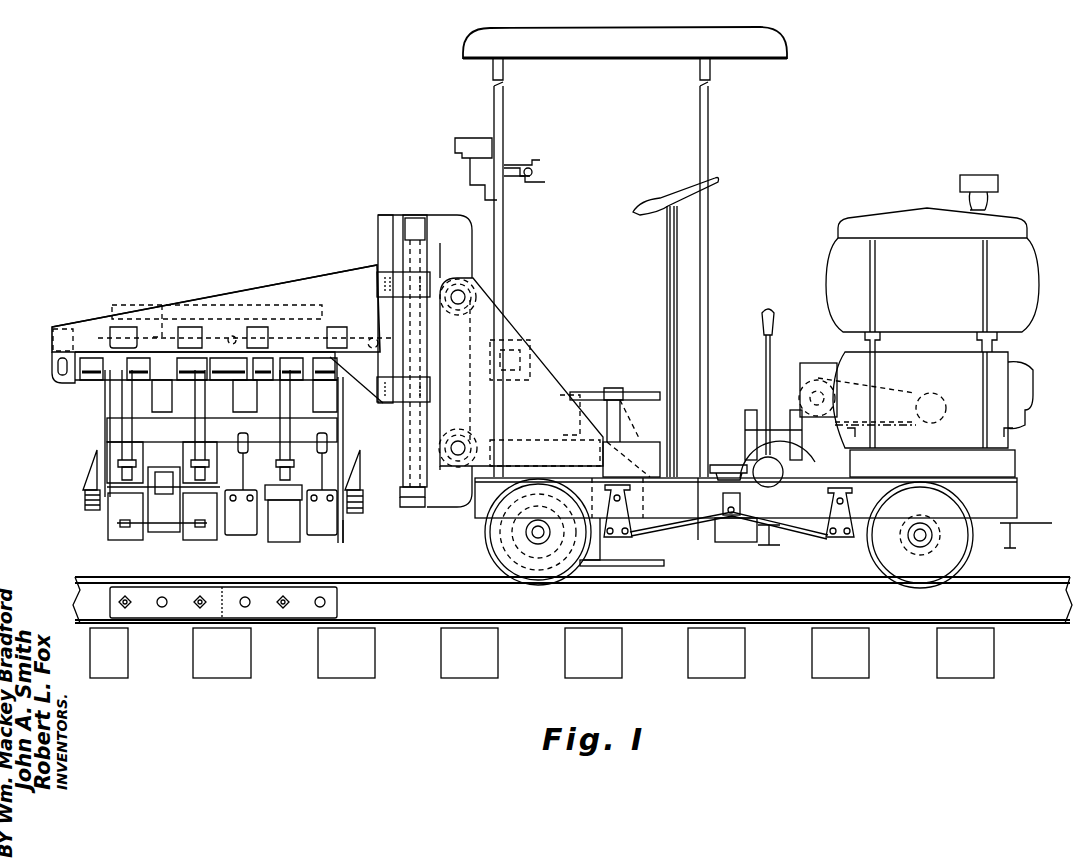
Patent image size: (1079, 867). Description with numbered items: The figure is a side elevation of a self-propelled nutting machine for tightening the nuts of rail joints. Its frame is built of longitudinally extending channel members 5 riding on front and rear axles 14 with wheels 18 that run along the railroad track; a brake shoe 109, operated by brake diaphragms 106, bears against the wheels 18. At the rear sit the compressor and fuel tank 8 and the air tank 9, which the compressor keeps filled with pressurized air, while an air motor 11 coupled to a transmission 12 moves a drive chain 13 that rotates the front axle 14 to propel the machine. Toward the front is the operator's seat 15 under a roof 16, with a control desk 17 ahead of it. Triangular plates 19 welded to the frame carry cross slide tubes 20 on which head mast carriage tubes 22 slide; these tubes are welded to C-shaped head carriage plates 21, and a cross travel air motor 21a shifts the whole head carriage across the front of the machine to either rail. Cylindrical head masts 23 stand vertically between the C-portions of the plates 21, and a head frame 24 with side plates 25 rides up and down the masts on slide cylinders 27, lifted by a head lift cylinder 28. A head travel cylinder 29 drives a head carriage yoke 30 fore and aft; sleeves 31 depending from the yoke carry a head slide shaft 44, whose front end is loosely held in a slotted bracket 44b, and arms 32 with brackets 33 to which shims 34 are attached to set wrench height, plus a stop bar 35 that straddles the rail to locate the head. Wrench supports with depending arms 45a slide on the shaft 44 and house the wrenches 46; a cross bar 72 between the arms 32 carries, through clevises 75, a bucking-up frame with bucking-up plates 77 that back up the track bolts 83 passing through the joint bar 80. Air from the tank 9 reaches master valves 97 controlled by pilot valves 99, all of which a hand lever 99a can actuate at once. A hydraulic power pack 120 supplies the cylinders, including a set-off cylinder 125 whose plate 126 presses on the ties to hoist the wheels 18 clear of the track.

The longitudinally extending channel members 5 is at (1020, 496).
The compressor and fuel tank 8 is at (932, 263).
The air tank 9 is at (933, 414).
The air motor 11 is at (820, 455).
The transmission 12 is at (770, 448).
The drive chain 13 is at (675, 530).
The axle 14 is at (542, 525).
The seat 15 is at (665, 203).
The roof 16 is at (778, 52).
The control desk 17 is at (455, 142).
The wheels 18 is at (488, 556).
The triangular plates 19 is at (538, 362).
The cross slide tubes 20 is at (476, 297).
The head carriage plates 21 is at (455, 228).
The cross travel air motor 21a is at (555, 392).
The head mast carriage tubes 22 is at (458, 436).
The head masts 23 is at (440, 470).
The head frame 24 is at (255, 284).
The side plates 25 is at (292, 280).
The slide cylinders 27 is at (378, 278).
The head lift cylinder 28 is at (408, 445).
The head travel cylinder 29 is at (372, 336).
The head carriage yoke 30 is at (160, 312).
The cylindrical sleeves 31 is at (104, 388).
The arms 32 is at (104, 420).
The bracket 33 is at (88, 470).
The shims 34 is at (84, 498).
The stop bar 35 is at (344, 540).
The head slide shaft 44 is at (80, 382).
The slotted bracket 44b is at (50, 370).
The hanger blocks 45a is at (120, 393).
The wrenches 46 is at (115, 503).
The cross bar 72 is at (252, 454).
The clevises 75 is at (322, 434).
The bucking-up plates 77 is at (255, 538).
The joint bar 80 is at (298, 590).
The track bolt 83 is at (165, 607).
The master valves 97 is at (108, 330).
The pilot valves 99 is at (534, 172).
The hand lever 99a is at (524, 160).
The brake diaphragms 106 is at (728, 464).
The brake shoe 109 is at (600, 528).
The hydraulic power pack 120 is at (818, 362).
The set-off cylinder 125 is at (633, 546).
The plate 126 is at (666, 565).